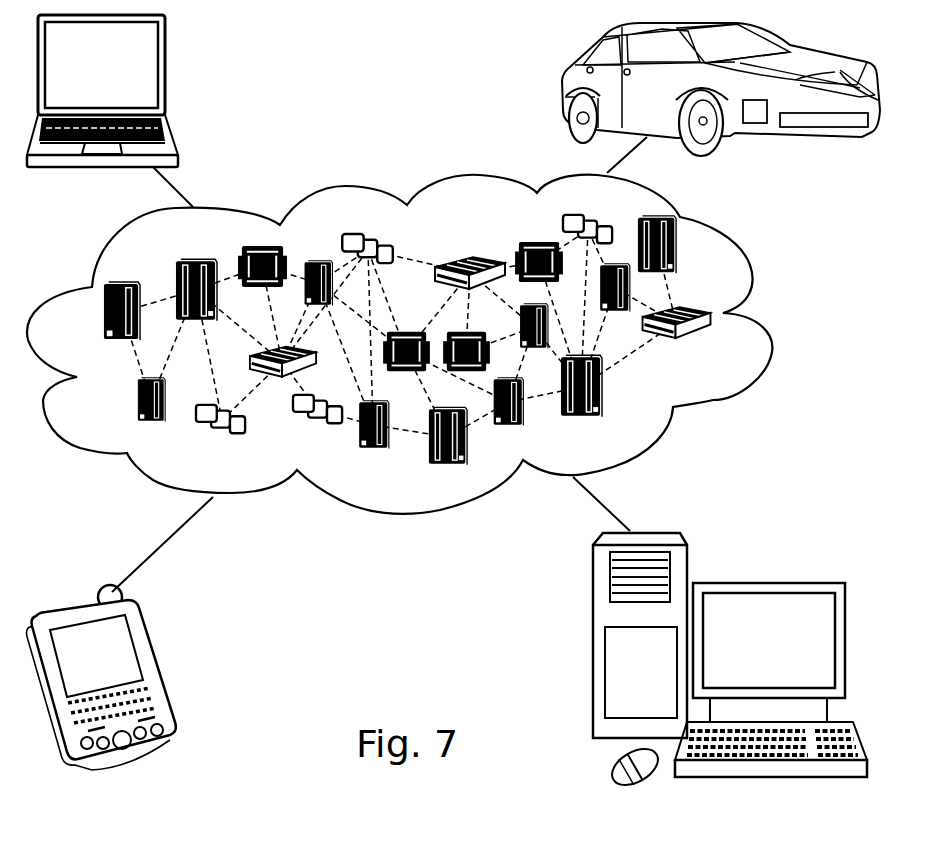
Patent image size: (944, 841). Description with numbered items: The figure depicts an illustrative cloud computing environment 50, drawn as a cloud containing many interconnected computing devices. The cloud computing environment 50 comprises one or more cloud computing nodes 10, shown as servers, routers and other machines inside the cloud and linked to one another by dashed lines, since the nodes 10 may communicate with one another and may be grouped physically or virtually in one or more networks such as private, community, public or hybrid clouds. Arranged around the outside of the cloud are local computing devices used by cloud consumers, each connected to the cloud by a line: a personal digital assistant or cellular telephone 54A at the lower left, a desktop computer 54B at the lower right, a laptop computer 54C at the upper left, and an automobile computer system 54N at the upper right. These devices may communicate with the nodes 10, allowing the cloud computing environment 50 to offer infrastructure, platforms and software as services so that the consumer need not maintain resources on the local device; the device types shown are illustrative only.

The cloud computing nodes 10 is at (722, 350).
The cloud computing environment 50 is at (767, 320).
The personal digital assistant or cellular telephone 54A is at (155, 663).
The desktop computer 54B is at (763, 582).
The laptop computer 54C is at (166, 70).
The automobile computer system 54N is at (566, 90).